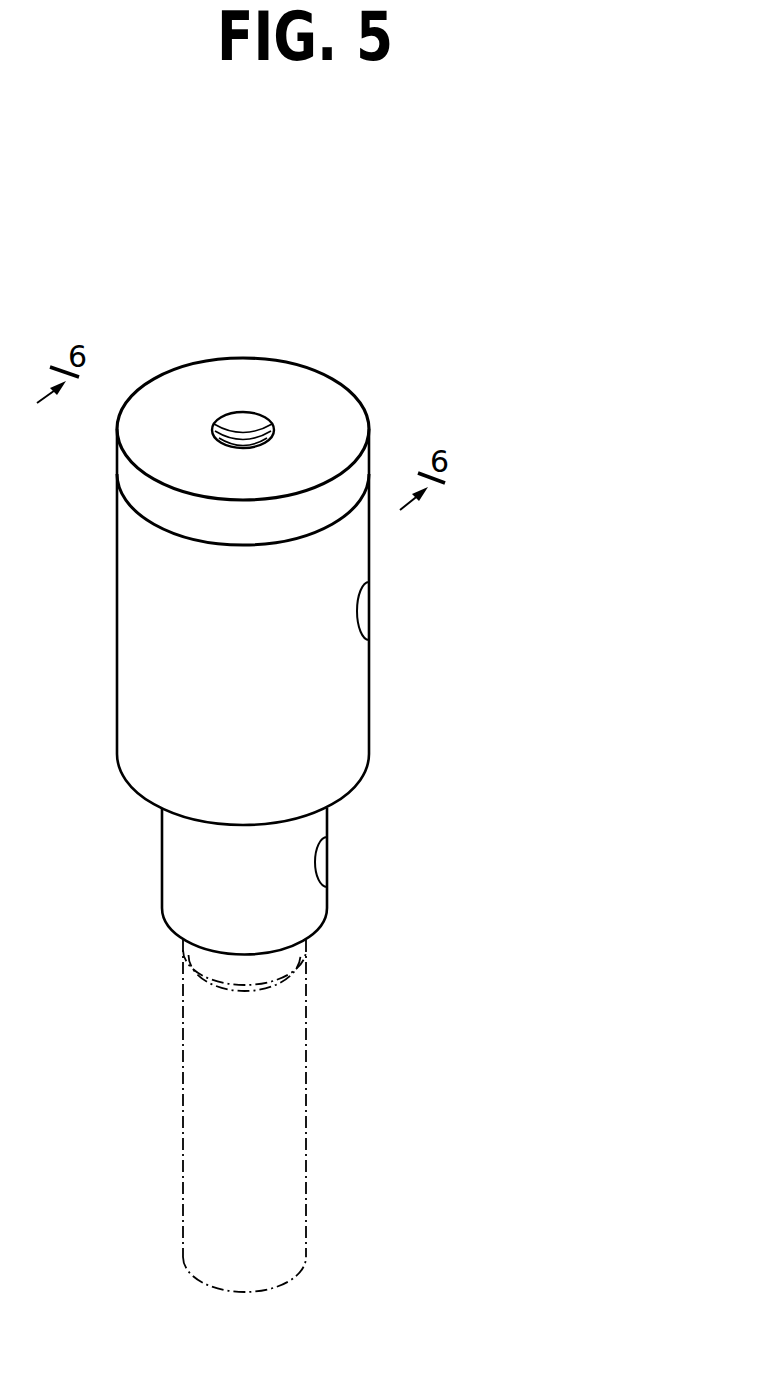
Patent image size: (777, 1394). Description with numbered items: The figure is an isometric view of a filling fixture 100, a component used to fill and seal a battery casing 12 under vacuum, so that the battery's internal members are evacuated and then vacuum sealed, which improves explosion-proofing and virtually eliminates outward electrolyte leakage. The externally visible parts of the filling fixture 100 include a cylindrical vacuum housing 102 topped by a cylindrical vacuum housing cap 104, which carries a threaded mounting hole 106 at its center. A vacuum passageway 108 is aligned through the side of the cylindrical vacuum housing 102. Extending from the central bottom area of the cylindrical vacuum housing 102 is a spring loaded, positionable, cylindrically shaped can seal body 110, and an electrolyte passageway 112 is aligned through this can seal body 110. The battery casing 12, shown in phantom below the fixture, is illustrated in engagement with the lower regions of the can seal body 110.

The filling fixture 100 is at (496, 516).
The cylindrical vacuum housing 102 is at (148, 629).
The cylindrical vacuum housing cap 104 is at (147, 501).
The threaded mounting hole 106 is at (240, 425).
The vacuum passageway 108 is at (362, 618).
The can seal body 110 is at (183, 867).
The electrolyte passageway 112 is at (326, 863).
The battery casing 12 is at (305, 1037).